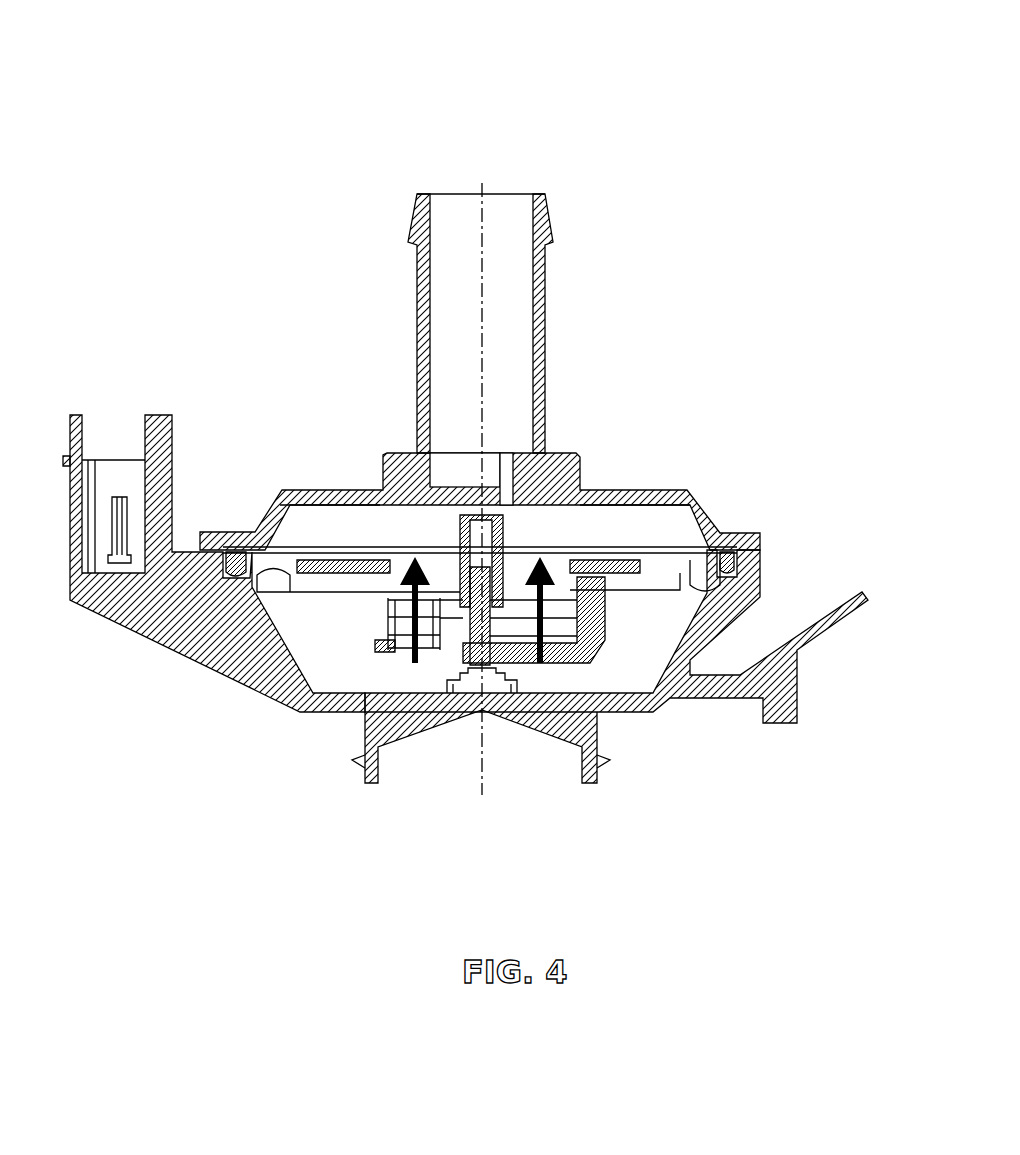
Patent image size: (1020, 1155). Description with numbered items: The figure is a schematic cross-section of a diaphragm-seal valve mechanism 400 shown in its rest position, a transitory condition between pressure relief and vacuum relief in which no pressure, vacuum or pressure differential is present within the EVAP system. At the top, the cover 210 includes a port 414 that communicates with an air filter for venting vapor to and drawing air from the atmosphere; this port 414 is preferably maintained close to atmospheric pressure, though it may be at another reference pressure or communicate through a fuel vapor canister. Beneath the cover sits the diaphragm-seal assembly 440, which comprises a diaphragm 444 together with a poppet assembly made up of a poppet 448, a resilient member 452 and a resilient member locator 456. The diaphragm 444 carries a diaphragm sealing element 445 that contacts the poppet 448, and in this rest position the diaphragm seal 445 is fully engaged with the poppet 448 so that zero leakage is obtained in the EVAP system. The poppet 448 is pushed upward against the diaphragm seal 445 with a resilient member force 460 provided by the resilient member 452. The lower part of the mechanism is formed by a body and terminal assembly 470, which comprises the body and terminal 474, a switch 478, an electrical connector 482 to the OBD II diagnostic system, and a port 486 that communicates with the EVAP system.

The diaphragm-seal valve mechanism 400 is at (836, 54).
The port 414 is at (482, 183).
The cover 210 is at (553, 241).
The electrical connector 482 is at (122, 497).
The diaphragm sealing element 445 is at (385, 558).
The poppet 448 is at (365, 565).
The resilient member force 460 is at (605, 562).
The diaphragm 444 is at (590, 565).
The diaphragm-seal assembly 440 is at (645, 556).
The resilient member 452 is at (705, 582).
The resilient member locator 456 is at (598, 640).
The body and terminal 474 is at (133, 630).
The switch 478 is at (470, 690).
The port 486 is at (482, 774).
The body and terminal assembly 470 is at (653, 712).